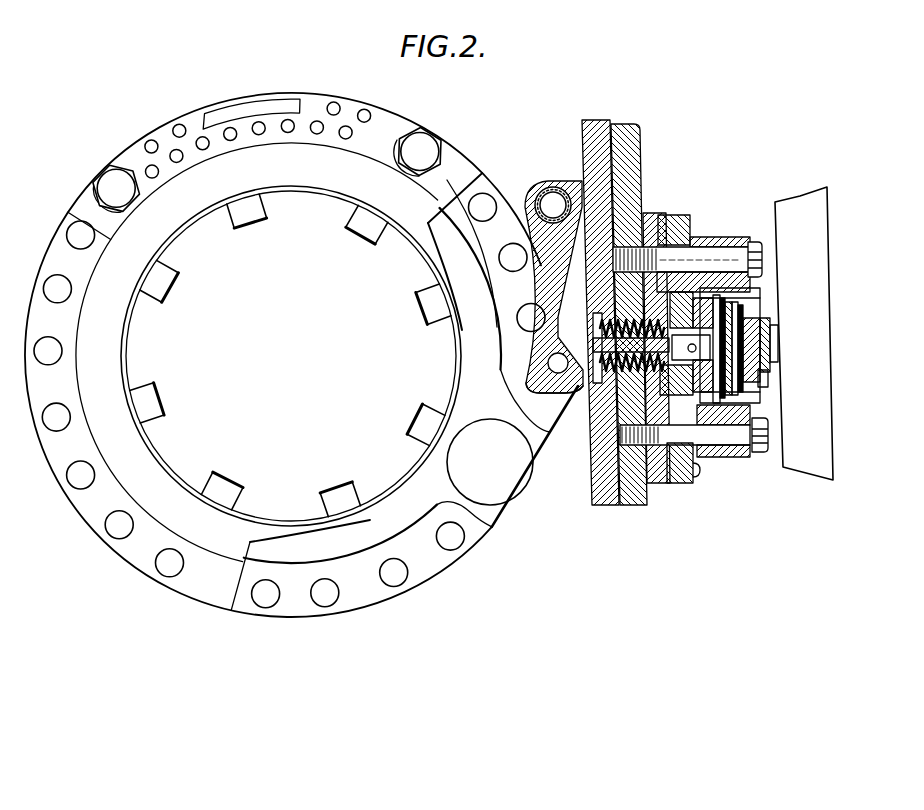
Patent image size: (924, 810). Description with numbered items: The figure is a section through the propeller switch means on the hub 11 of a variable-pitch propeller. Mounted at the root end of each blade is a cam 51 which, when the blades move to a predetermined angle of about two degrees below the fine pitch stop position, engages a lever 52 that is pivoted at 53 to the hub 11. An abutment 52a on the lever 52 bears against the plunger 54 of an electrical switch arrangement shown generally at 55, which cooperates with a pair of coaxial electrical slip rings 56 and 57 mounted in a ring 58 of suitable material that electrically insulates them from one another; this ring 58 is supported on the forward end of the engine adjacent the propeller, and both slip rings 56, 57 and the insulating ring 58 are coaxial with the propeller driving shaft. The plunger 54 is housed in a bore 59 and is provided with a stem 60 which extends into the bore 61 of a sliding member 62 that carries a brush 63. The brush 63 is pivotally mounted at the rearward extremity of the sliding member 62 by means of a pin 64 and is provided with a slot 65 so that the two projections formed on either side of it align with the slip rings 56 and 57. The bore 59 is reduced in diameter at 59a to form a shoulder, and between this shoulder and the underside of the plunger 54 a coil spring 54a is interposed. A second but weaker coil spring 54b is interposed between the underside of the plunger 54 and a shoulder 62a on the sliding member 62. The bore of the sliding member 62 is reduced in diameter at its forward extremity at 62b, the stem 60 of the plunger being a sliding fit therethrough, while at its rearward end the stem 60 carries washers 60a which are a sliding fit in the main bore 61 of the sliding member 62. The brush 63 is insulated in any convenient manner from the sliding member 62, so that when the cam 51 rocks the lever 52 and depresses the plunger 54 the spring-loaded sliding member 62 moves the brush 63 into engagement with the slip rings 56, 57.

The hub 11 is at (603, 123).
The cam 51 is at (510, 478).
The lever 52 is at (530, 293).
The abutment 52a is at (560, 400).
The pivot 53 is at (556, 194).
The plunger 54 is at (591, 333).
The coil spring 54a is at (643, 322).
The second coil spring 54b is at (599, 416).
The electrical switch arrangement 55 is at (740, 486).
The slip ring 56 is at (807, 233).
The slip ring 57 is at (839, 274).
The ring 58 is at (849, 281).
The bore 59 is at (666, 262).
The reduced diameter portion 59a is at (705, 275).
The stem 60 is at (620, 486).
The washers 60a is at (688, 276).
The bore 61 is at (677, 480).
The sliding member 62 is at (696, 484).
The shoulder 62a is at (720, 323).
The reduced diameter portion 62b is at (650, 473).
The brush 63 is at (760, 252).
The pin 64 is at (741, 345).
The slot 65 is at (772, 362).